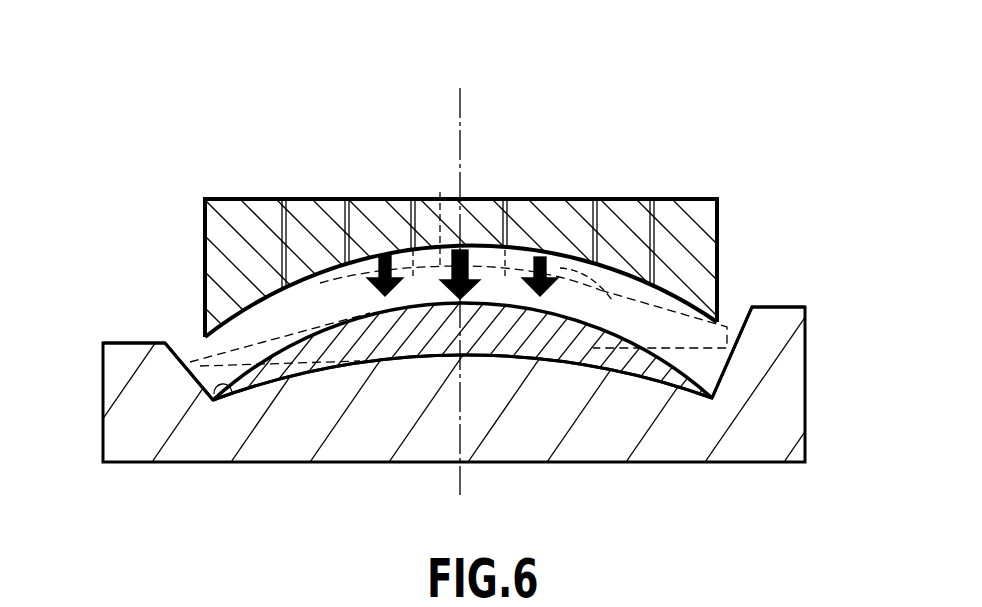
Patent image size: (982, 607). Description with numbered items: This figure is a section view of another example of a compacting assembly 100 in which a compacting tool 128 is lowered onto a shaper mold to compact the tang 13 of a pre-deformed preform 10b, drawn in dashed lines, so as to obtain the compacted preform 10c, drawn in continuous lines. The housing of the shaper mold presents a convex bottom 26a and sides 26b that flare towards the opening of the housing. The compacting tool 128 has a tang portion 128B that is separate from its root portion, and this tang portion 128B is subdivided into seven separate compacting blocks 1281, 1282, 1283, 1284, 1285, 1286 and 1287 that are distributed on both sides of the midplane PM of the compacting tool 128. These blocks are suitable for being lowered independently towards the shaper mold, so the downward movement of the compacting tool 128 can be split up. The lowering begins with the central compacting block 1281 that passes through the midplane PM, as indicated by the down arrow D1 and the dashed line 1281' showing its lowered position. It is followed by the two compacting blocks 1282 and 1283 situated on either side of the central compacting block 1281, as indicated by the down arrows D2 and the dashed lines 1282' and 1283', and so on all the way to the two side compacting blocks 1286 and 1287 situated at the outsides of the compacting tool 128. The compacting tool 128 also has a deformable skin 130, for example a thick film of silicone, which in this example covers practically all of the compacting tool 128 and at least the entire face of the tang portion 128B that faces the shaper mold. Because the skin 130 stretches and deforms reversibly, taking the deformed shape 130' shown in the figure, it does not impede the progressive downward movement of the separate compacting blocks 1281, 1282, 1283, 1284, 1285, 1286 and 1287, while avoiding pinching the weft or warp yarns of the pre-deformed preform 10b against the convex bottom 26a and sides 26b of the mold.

The compacting tool 128 is at (463, 303).
The tang portion 128B is at (197, 196).
The compacting block 1287 is at (245, 213).
The compacting block 1285 is at (315, 213).
The compacting block 1283 is at (460, 303).
The central compacting block 1281 is at (460, 303).
The compacting block 1282 is at (460, 303).
The compacting block 1284 is at (629, 213).
The compacting block 1286 is at (221, 134).
The lowered position of compacting block 1283' is at (280, 333).
The lowered position of central compacting block 1281' is at (460, 228).
The lowered position of compacting block 1282' is at (643, 308).
The midplane PM is at (462, 132).
The deformable skin 130 is at (511, 248).
The deformed shape of the skin 130' is at (462, 377).
The forming tool assembly 100 is at (475, 353).
The pre-deformed preform 10b is at (200, 352).
The compacted preform 10c is at (213, 402).
The tang 13 is at (402, 334).
The convex bottom 26a is at (563, 350).
The sides 26b is at (735, 320).
The down arrow D1 is at (471, 279).
The down arrow D2 is at (460, 285).